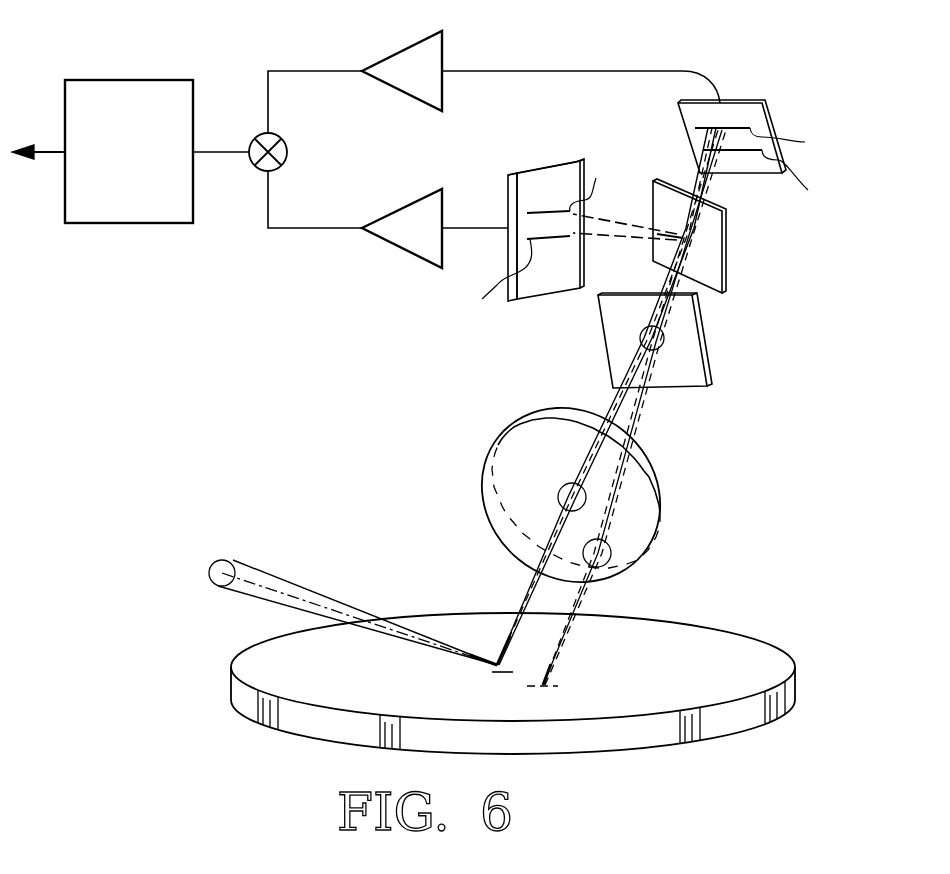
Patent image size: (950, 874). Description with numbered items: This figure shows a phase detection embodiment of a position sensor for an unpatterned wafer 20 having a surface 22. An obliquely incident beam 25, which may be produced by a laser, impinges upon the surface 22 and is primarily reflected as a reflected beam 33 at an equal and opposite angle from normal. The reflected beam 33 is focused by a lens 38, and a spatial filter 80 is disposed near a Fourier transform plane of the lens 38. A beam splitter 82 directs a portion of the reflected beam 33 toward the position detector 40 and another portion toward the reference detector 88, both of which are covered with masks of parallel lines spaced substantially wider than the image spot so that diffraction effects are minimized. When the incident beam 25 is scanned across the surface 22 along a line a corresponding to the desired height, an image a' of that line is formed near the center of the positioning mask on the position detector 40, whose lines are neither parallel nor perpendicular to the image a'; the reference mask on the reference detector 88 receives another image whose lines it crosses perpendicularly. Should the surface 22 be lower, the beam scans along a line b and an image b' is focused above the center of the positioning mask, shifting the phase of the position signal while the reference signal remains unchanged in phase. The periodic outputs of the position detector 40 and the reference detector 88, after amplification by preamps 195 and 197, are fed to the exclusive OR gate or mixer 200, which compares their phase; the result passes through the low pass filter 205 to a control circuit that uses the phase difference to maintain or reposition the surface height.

The wafer 20 is at (553, 673).
The surface 22 is at (762, 648).
The incident beam 25 is at (280, 580).
The reflected beam 33 is at (527, 614).
The lens 38 is at (656, 505).
The position detector 40 is at (771, 112).
The spatial filter 80 is at (705, 340).
The beam splitter 82 is at (724, 258).
The reference detector 88 is at (546, 167).
The preamp 195 is at (393, 90).
The preamp 197 is at (393, 215).
The exclusive OR gate or mixer 200 is at (246, 176).
The low pass filter 205 is at (130, 226).
The scan line a is at (481, 685).
The scan line b is at (563, 673).
The image line a' is at (797, 176).
The image line b' is at (791, 142).